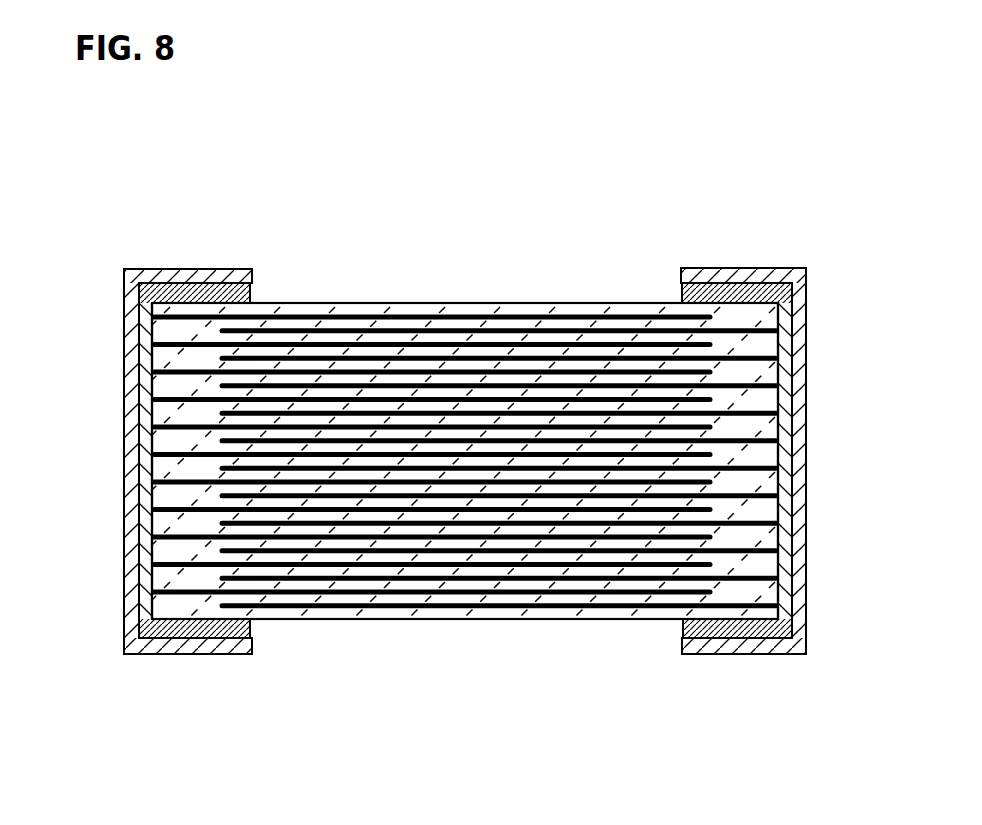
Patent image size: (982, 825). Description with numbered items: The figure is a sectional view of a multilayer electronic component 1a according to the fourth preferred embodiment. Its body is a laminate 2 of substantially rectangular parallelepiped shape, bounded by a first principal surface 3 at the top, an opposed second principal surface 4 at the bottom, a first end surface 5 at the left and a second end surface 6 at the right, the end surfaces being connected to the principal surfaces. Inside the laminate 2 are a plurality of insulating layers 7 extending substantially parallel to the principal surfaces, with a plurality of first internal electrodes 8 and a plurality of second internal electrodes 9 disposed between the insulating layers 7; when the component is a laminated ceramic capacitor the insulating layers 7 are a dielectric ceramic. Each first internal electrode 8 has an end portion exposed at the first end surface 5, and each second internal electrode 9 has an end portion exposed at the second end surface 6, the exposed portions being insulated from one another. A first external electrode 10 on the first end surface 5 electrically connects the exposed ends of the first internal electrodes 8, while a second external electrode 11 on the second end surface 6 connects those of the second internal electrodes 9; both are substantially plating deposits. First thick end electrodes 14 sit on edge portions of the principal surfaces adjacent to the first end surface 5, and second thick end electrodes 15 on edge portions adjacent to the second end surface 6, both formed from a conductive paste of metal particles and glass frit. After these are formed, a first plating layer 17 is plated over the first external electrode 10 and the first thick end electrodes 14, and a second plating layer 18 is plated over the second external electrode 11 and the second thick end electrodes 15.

The multilayer electronic component 1a is at (159, 149).
The laminate 2 is at (640, 304).
The first principal surface 3 is at (545, 303).
The second principal surface 4 is at (565, 620).
The first end surface 5 is at (150, 493).
The second end surface 6 is at (780, 503).
The insulating layers 7 is at (418, 586).
The first internal electrodes 8 is at (380, 342).
The second internal electrodes 9 is at (493, 357).
The first external electrode 10 is at (150, 359).
The second external electrode 11 is at (785, 358).
The first thick end electrodes 14 is at (129, 418).
The second thick end electrodes 15 is at (800, 426).
The first plating layer 17 is at (135, 407).
The second plating layer 18 is at (800, 403).